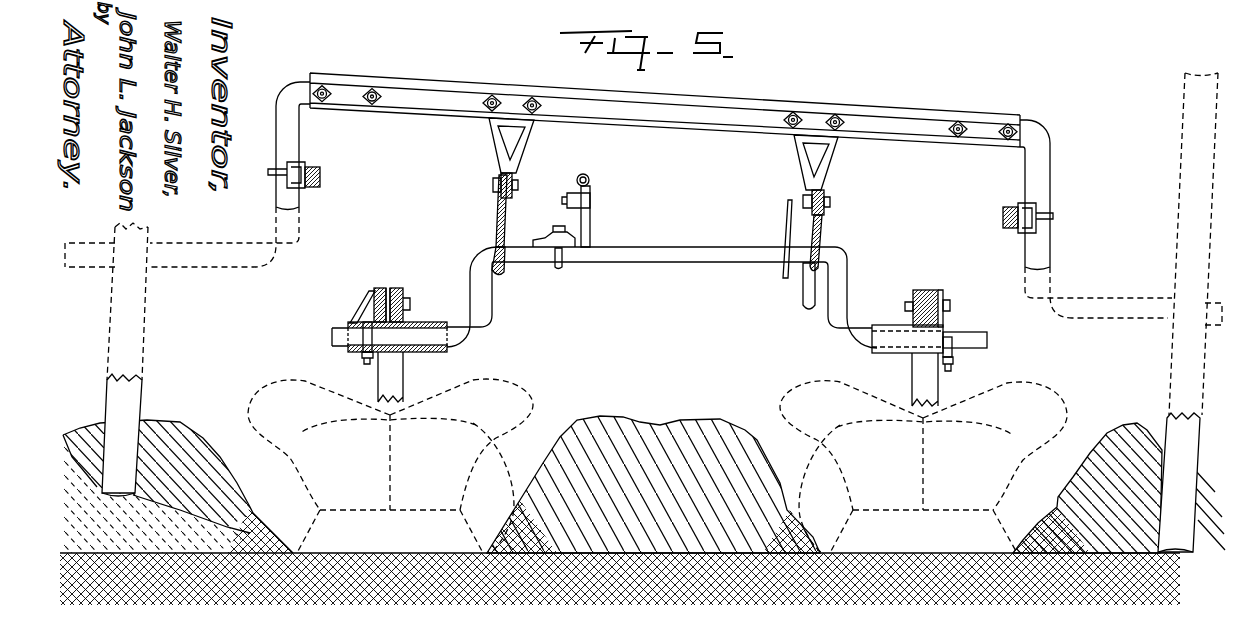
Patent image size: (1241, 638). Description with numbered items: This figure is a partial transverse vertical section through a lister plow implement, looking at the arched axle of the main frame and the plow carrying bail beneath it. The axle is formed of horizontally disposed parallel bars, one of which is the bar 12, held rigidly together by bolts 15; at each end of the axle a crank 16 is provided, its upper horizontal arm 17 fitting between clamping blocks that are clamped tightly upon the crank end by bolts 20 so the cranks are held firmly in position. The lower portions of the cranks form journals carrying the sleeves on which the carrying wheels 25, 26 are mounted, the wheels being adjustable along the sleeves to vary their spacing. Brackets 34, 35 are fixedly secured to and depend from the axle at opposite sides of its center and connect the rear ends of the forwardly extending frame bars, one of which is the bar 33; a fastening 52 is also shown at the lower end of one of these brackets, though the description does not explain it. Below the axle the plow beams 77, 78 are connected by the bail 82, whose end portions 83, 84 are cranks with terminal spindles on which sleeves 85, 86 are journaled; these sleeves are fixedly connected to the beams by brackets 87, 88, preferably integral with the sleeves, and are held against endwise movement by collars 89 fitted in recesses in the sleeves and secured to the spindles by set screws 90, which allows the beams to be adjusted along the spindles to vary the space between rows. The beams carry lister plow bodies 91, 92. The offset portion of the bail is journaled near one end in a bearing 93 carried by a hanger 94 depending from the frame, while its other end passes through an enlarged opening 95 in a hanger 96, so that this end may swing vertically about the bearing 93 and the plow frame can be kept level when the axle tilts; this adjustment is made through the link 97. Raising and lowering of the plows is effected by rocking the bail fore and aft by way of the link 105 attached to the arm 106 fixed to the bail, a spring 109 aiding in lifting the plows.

The horizontally disposed bar 12 is at (671, 130).
The bolts 15 is at (530, 99).
The cranks 16 is at (272, 186).
The upper horizontal arms 17 is at (316, 90).
The bolts 20 is at (370, 100).
The carrying wheel 25 is at (146, 384).
The carrying wheel 26 is at (1167, 415).
The forwardly extending bar 33 is at (512, 180).
The bracket 34 is at (797, 157).
The bracket 35 is at (524, 142).
The bolt 52 is at (822, 195).
The plow beam 77 is at (926, 290).
The plow beam 78 is at (393, 288).
The bail 82 is at (640, 237).
The end portion 83 is at (990, 340).
The end portion 84 is at (332, 336).
The sleeve 85 is at (879, 351).
The sleeve 86 is at (464, 297).
The bracket 87 is at (948, 320).
The bracket 88 is at (363, 304).
The collars 89 is at (360, 352).
The set screws 90 is at (367, 366).
The lister plow body 91 is at (290, 462).
The lister plow body 92 is at (1000, 492).
The bearing 93 is at (505, 268).
The bracket or hanger 94 is at (497, 216).
The enlarged opening 95 is at (806, 278).
The bracket or hanger 96 is at (822, 226).
The link 97 is at (786, 212).
The link 105 is at (578, 192).
The arm 106 is at (591, 218).
The spring 109 is at (590, 182).